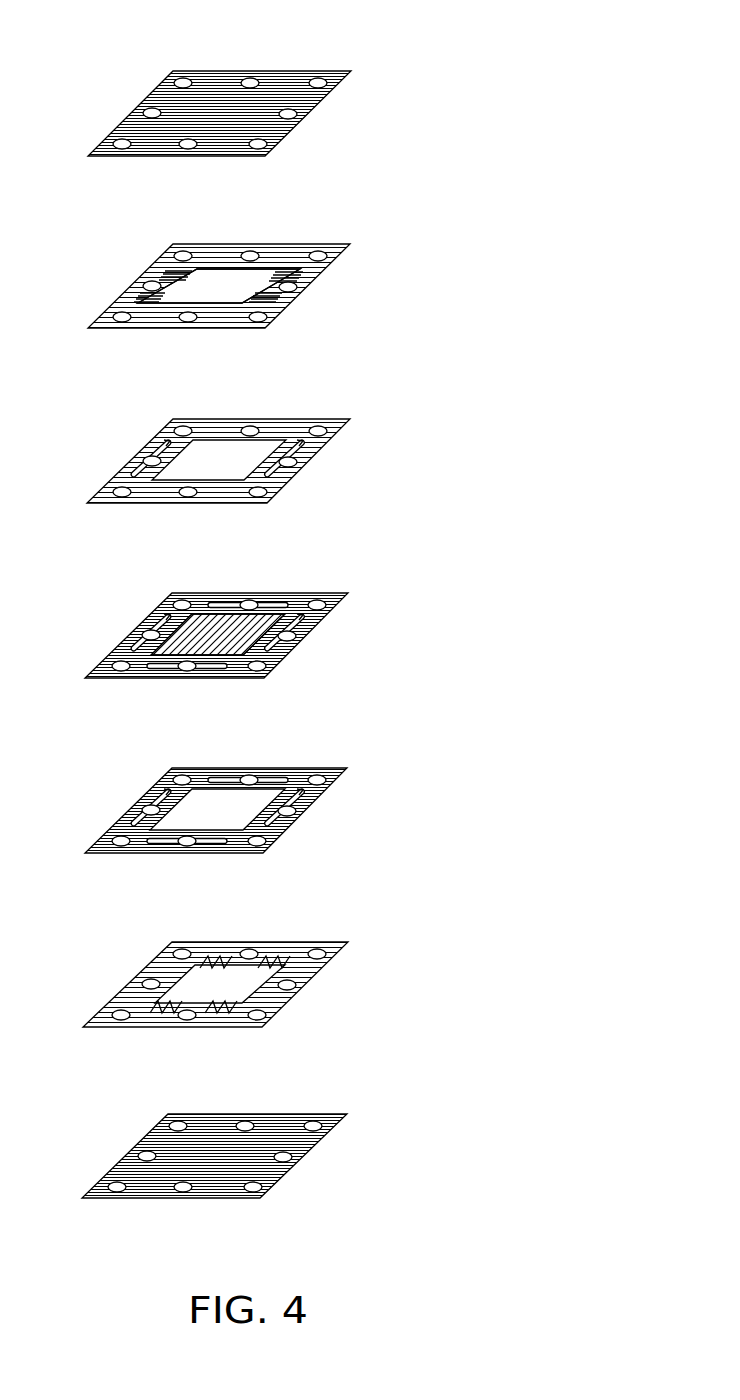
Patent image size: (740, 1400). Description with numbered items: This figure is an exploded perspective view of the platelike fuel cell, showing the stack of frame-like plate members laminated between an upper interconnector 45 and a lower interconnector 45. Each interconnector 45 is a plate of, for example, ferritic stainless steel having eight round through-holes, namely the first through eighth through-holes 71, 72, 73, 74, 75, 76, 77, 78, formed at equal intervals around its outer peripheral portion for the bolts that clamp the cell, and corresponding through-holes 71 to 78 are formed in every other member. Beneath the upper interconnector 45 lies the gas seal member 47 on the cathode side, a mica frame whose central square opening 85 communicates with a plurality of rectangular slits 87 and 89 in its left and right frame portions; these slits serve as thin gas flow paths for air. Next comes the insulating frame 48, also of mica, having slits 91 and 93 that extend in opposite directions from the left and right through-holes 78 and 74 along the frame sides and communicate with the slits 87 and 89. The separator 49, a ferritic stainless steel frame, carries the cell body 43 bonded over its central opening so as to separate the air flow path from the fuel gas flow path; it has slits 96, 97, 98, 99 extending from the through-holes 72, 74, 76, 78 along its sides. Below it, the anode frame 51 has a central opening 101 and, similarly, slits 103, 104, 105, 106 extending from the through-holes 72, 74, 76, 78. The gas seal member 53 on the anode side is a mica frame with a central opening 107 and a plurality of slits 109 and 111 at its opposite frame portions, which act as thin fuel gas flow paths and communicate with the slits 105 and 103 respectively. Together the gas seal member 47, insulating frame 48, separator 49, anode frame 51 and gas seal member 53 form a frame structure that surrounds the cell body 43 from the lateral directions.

The cell body 43 is at (278, 657).
The interconnector 45 is at (326, 95).
The gas seal member on the side toward the cathode 47 is at (327, 266).
The insulating frame 48 is at (326, 443).
The separator 49 is at (325, 617).
The anode frame 51 is at (320, 766).
The gas seal member on the side toward the anode 53 is at (325, 966).
The first through-hole 71 is at (183, 80).
The second through-hole 72 is at (250, 80).
The third through-hole 73 is at (318, 80).
The fourth through-hole 74 is at (295, 118).
The fifth through-hole 75 is at (262, 148).
The sixth through-hole 76 is at (186, 148).
The seventh through-hole 77 is at (116, 140).
The eighth through-hole 78 is at (152, 110).
The central square opening 85 is at (262, 278).
The rectangular slits 87 is at (140, 296).
The rectangular slits 89 is at (308, 284).
The slit 91 is at (158, 448).
The slit 93 is at (300, 455).
The slit 96 is at (230, 600).
The slit 97 is at (300, 630).
The slit 98 is at (207, 670).
The slit 99 is at (157, 620).
The central opening 101 is at (262, 802).
The slit 103 is at (230, 775).
The slit 104 is at (300, 815).
The slit 105 is at (207, 845).
The slit 106 is at (157, 795).
The opening 107 is at (270, 960).
The slits 109 is at (160, 1005).
The slits 111 is at (212, 960).